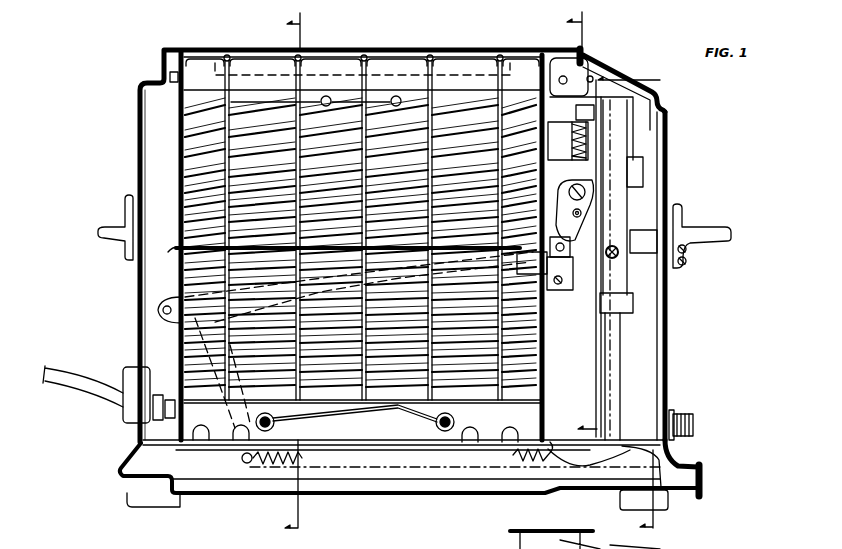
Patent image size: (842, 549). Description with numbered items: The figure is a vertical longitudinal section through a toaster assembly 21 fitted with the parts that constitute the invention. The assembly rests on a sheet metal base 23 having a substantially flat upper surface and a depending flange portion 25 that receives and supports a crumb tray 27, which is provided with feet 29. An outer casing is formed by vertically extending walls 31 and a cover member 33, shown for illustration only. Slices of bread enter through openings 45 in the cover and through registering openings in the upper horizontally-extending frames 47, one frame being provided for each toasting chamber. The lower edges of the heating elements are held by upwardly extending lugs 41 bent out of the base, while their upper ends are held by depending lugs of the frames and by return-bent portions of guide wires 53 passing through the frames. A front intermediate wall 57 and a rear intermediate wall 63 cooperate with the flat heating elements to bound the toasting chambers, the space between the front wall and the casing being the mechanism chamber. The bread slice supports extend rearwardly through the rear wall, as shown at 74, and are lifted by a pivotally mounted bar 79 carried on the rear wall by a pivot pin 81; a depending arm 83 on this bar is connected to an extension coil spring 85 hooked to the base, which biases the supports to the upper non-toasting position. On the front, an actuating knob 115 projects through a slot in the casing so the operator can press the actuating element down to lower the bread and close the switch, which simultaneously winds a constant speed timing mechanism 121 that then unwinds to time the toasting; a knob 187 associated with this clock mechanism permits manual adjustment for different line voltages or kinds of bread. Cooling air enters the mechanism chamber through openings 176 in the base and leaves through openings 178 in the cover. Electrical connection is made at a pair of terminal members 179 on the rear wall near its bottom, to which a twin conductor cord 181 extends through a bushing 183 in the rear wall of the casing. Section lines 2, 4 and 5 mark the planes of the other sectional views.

The section line 2- 2 is at (299, 279).
The section line 4- 4 is at (617, 278).
The section line 5- 5 is at (625, 254).
The toaster assembly 21 is at (700, 163).
The base 23 is at (676, 457).
The depending flange portion 25 is at (705, 479).
The crumb tray 27 is at (428, 495).
The feet 29 is at (178, 508).
The vertically extending walls 31 is at (668, 352).
The cover member 33 is at (619, 66).
The upwardly extending lugs 41 is at (205, 428).
The openings 45 is at (230, 50).
The upper horizontally-extending frames 47 is at (564, 57).
The guide wires 53 is at (495, 76).
The front intermediate wall 57 is at (540, 58).
The rear intermediate wall 63 is at (178, 130).
The rearward extension of bread slice support 74 is at (176, 249).
The pivotally mounted bar 79 is at (359, 340).
The pivot pin 81 is at (157, 310).
The depending arm 83 is at (243, 459).
The extension coil spring 85 is at (302, 463).
The actuating knob 115 is at (697, 230).
The constant speed timing mechanism 121 is at (617, 458).
The openings 176 is at (655, 500).
The openings 178 is at (586, 56).
The terminal members 179 is at (160, 424).
The twin conductor cord 181 is at (67, 378).
The bushing 183 is at (123, 414).
The knob 187 is at (683, 415).